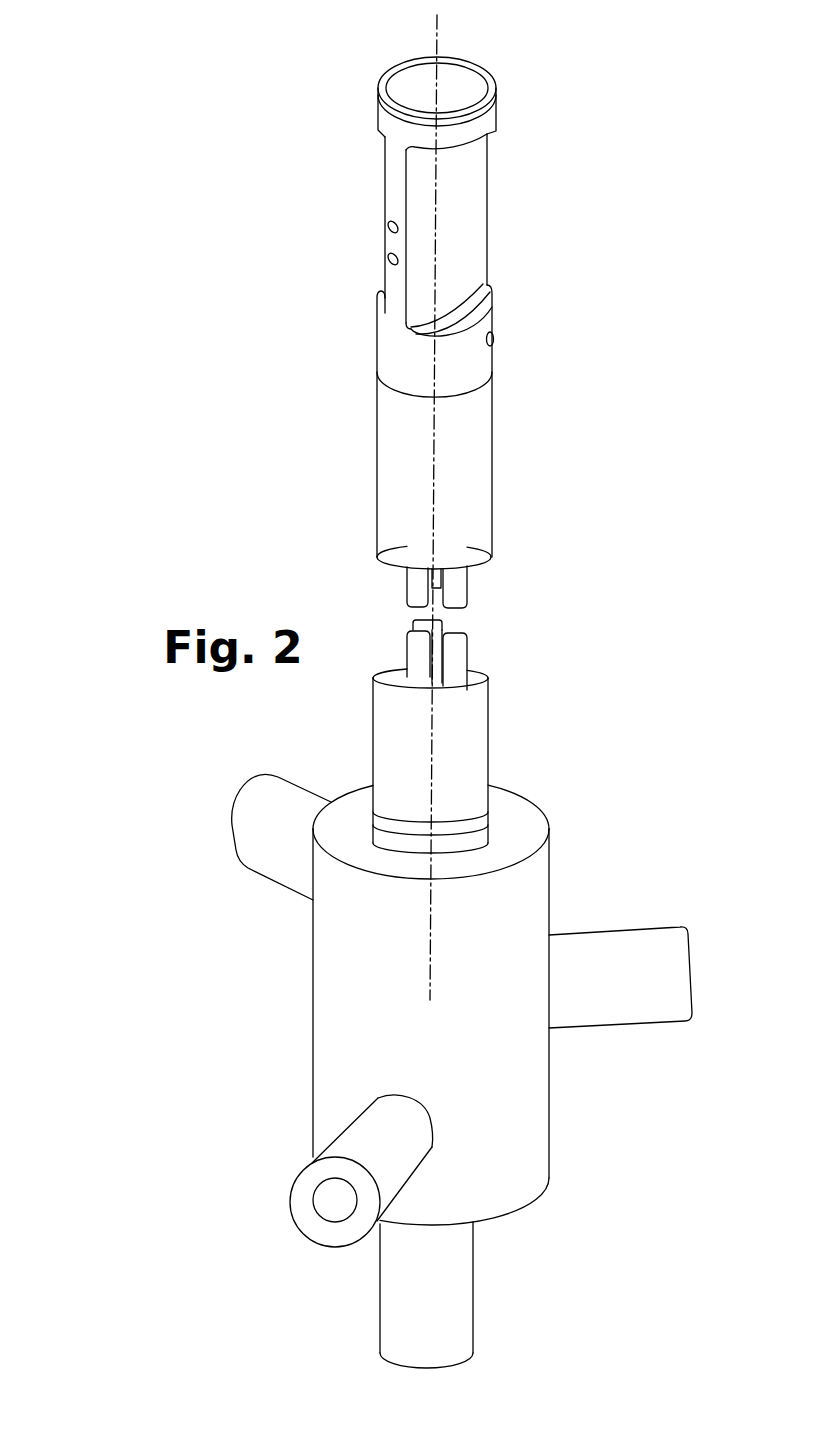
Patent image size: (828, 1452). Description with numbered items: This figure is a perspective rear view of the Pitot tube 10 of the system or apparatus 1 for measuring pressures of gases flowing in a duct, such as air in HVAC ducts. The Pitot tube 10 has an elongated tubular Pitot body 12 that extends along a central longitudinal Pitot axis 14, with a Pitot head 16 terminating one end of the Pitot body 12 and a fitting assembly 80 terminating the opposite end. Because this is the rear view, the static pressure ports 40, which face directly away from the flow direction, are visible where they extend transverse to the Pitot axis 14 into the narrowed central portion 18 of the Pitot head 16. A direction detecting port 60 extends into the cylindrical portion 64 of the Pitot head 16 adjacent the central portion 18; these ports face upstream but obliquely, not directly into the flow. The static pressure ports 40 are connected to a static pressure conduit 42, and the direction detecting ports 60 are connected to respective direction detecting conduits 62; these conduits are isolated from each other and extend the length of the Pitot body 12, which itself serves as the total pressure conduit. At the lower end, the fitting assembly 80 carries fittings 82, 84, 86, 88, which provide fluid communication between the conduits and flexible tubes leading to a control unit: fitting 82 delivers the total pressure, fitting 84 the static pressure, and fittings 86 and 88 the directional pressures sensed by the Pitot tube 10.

The system or apparatus 1 is at (165, 175).
The Pitot tube 10 is at (356, 68).
The Pitot body 12 is at (457, 478).
The Pitot axis 14 is at (437, 28).
The Pitot head 16 is at (467, 80).
The narrowed central portion 18 is at (448, 220).
The static pressure port 40 is at (389, 258).
The static pressure conduit 42 is at (415, 587).
The direction detecting port 60 is at (494, 340).
The direction detecting conduit 62 is at (453, 598).
The cylindrical portion 64 is at (447, 368).
The fitting assembly 80 is at (528, 880).
The fitting 82 is at (442, 1275).
The fitting 84 is at (625, 945).
The fitting 86 is at (292, 795).
The fitting 88 is at (348, 1138).